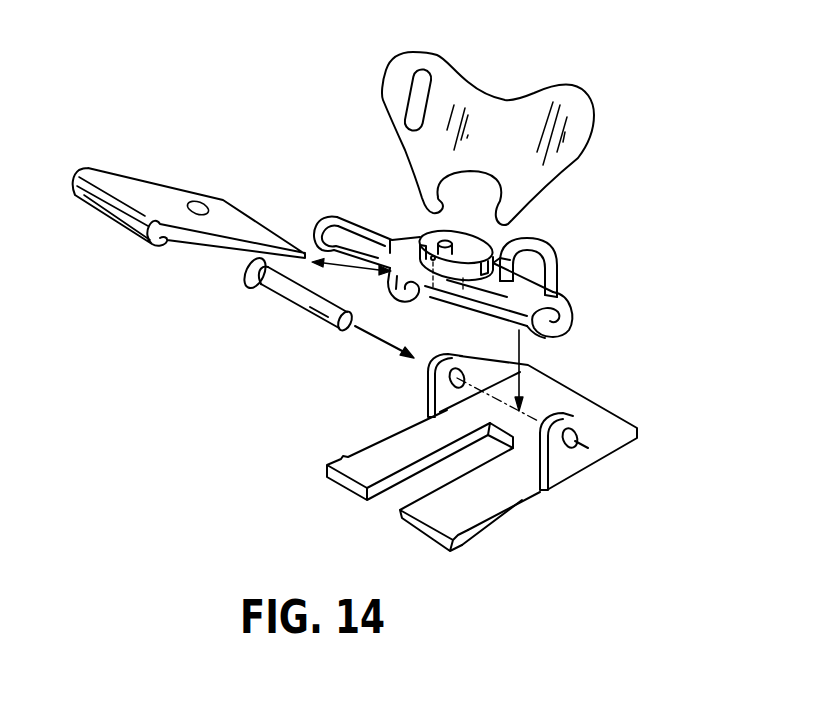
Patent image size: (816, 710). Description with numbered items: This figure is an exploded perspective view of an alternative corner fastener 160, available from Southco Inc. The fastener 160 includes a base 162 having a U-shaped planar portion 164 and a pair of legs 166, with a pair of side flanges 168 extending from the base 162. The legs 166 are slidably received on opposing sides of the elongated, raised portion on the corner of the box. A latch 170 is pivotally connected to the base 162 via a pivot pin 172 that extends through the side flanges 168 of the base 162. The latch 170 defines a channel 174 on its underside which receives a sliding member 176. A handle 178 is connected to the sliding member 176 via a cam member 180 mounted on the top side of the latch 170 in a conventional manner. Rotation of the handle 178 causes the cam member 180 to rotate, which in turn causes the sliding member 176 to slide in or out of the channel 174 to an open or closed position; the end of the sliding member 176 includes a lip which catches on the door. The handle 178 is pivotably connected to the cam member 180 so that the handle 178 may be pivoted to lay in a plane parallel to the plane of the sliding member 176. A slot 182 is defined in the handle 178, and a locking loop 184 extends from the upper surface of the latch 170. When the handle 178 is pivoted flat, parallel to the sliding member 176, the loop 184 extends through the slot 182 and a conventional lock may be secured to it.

The fastener 160 is at (709, 283).
The base 162 is at (561, 518).
The U-shaped planar portion 164 is at (413, 442).
The legs 166 is at (423, 537).
The side flanges 168 is at (428, 384).
The latch 170 is at (326, 202).
The pivot pin 172 is at (273, 300).
The channel 174 is at (393, 237).
The sliding member 176 is at (134, 188).
The handle 178 is at (512, 93).
The cam member 180 is at (498, 236).
The slot 182 is at (413, 97).
The locking loop 184 is at (563, 269).